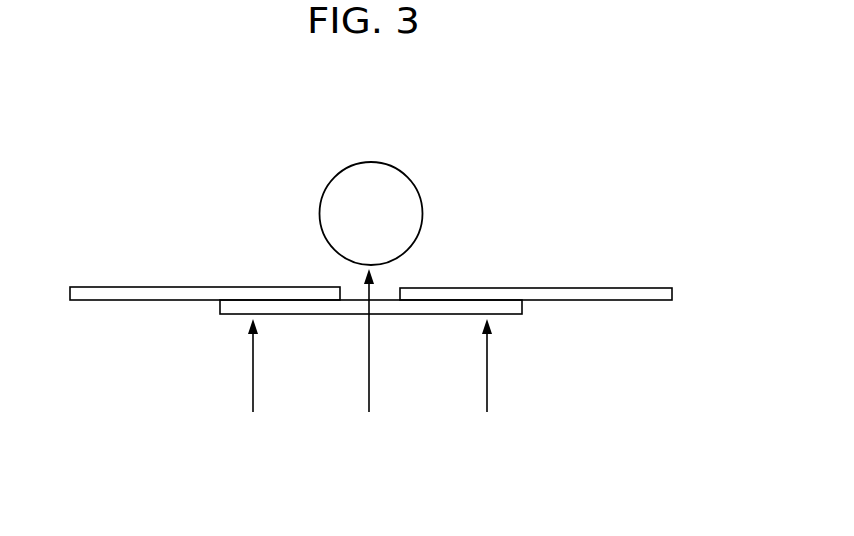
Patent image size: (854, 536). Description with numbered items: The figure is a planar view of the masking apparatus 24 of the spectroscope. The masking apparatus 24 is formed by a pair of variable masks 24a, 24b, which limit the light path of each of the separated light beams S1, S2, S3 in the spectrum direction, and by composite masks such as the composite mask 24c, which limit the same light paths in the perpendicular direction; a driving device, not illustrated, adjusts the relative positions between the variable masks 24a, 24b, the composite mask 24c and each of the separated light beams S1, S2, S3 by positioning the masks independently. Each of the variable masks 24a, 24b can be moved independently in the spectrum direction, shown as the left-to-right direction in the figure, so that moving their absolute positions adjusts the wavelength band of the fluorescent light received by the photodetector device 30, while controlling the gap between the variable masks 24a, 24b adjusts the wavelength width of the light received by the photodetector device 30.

The masking apparatus 24 is at (145, 176).
The variable mask 24a is at (128, 296).
The variable mask 24b is at (592, 295).
The composite mask 24c is at (272, 306).
The photodetector device 30 is at (394, 178).
The separated light beam S1 is at (487, 386).
The separated light beam S2 is at (369, 386).
The separated light beam S3 is at (253, 386).